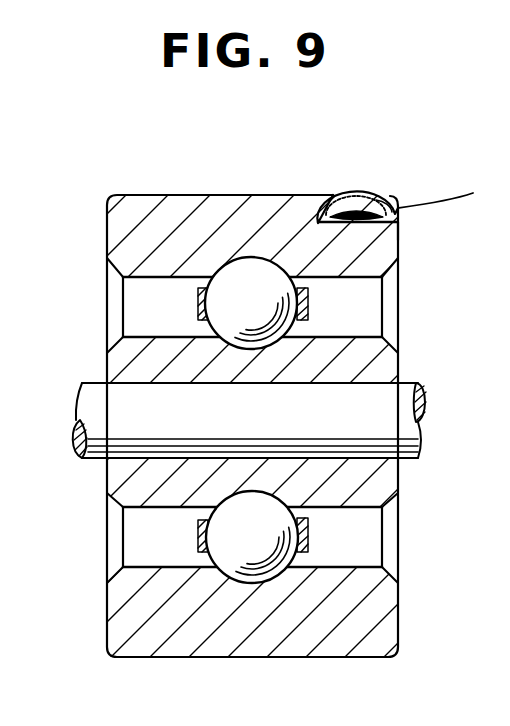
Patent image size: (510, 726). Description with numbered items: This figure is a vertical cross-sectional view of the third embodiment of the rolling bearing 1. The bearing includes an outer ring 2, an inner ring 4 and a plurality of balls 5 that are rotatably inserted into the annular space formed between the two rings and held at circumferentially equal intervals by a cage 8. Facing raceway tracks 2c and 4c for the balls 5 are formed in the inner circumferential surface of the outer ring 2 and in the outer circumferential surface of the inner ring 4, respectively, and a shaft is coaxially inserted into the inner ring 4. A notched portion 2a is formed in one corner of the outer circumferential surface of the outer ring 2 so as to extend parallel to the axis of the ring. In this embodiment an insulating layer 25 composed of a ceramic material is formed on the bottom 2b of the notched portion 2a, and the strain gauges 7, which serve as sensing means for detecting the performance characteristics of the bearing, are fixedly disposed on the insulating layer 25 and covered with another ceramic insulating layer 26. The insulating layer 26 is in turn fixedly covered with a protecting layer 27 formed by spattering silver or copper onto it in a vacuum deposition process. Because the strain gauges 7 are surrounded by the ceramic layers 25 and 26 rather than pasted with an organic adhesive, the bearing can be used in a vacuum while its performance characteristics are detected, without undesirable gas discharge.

The rolling bearing 1 is at (371, 170).
The outer ring 2 is at (384, 252).
The notched portion 2a is at (387, 196).
The bottom of the notched portion 2b is at (400, 230).
The raceway track 2c is at (244, 250).
The inner ring 4 is at (385, 357).
The raceway track 4c is at (228, 342).
The balls 5 is at (308, 302).
The strain gauges 7 is at (340, 208).
The cage 8 is at (300, 313).
The insulating layer 25 is at (338, 207).
The insulating layer 26 is at (352, 204).
The protecting layer 27 is at (378, 205).